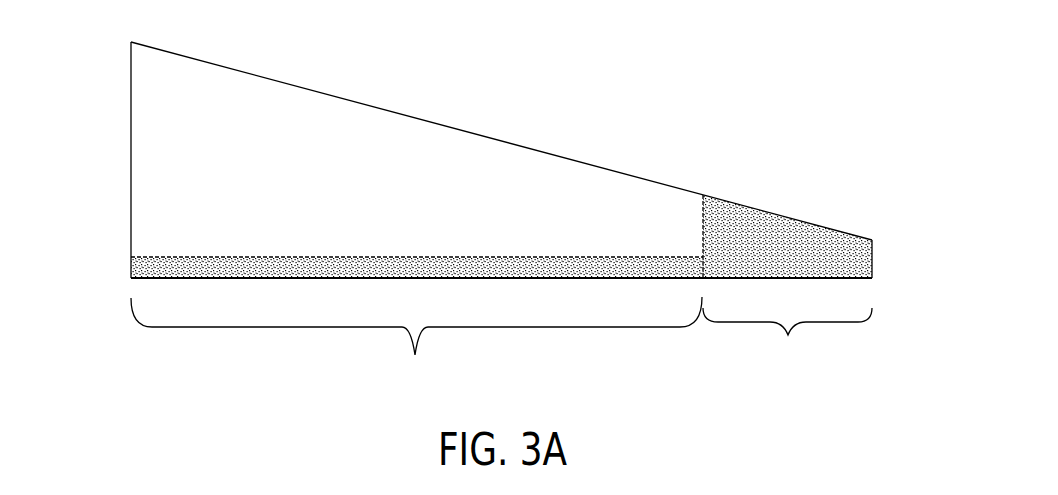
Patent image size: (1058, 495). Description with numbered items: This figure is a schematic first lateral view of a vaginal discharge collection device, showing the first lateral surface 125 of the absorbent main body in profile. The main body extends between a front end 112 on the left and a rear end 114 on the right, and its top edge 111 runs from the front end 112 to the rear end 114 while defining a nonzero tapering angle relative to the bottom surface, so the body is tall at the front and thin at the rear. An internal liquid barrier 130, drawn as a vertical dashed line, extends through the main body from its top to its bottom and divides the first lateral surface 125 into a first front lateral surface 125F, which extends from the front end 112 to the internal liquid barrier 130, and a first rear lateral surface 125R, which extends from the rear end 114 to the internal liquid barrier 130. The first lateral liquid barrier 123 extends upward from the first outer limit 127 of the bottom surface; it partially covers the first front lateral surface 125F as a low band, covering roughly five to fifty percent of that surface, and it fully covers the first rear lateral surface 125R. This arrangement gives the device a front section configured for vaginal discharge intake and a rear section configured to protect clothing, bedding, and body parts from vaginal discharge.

The top edge 111 is at (358, 101).
The front end 112 is at (118, 160).
The rear end 114 is at (887, 261).
The first lateral liquid barrier 123 is at (416, 266).
The first lateral surface 125 is at (560, 128).
The first front lateral surface 125F is at (416, 346).
The first rear lateral surface 125R is at (787, 343).
The first outer limit 127 is at (212, 281).
The internal liquid barrier 130 is at (703, 215).